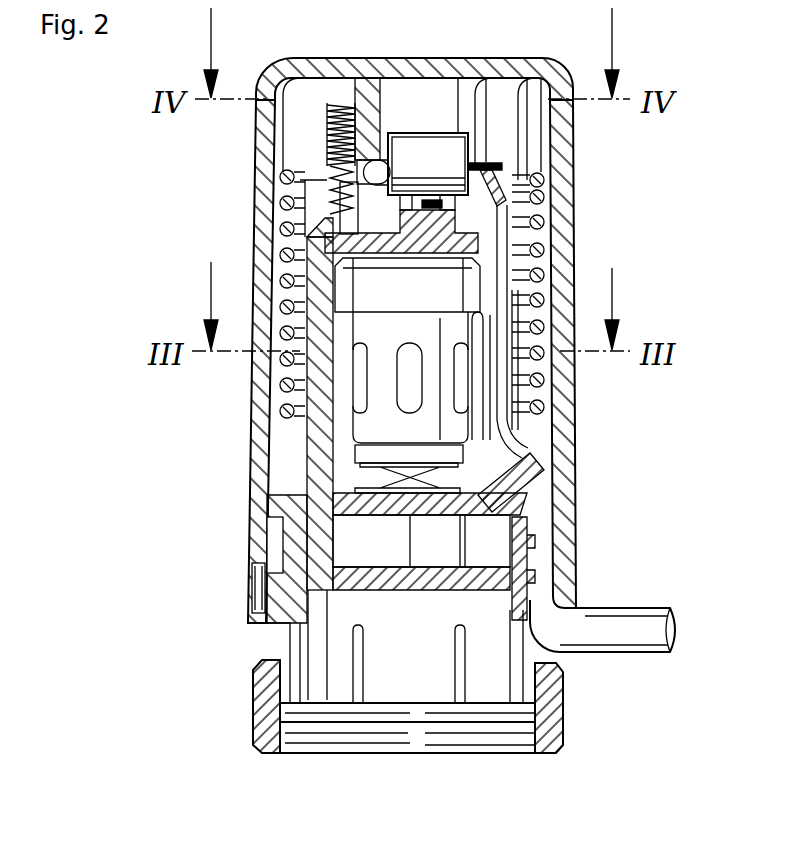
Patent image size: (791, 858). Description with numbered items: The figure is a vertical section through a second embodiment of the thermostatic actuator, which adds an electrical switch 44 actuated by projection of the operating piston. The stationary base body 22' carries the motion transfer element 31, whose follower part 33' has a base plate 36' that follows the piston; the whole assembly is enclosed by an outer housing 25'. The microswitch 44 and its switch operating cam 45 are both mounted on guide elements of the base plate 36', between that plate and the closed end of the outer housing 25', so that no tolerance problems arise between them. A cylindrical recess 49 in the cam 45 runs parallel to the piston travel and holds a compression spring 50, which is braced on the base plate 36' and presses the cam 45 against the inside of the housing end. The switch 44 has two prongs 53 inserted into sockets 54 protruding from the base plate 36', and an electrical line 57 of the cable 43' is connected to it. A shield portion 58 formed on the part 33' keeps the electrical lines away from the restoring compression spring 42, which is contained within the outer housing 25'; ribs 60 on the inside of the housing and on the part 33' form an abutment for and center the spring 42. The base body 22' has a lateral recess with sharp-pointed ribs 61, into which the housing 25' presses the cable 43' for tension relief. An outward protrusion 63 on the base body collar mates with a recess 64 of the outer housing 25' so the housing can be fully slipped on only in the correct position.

The base body 22' is at (353, 598).
The outer housing 25' is at (384, 340).
The motion transfer element 31 is at (305, 242).
The part of actuating element 33' is at (255, 216).
The base plate 36' is at (402, 351).
The compression spring 42 is at (283, 270).
The cable 43' is at (602, 658).
The electrical switch 44 is at (433, 164).
The switch operating cam 45 is at (352, 88).
The cylindrical recess 49 is at (327, 138).
The compression spring 50 is at (327, 160).
The prongs 53 is at (430, 203).
The sockets 54 is at (447, 221).
The electrical line 57 is at (500, 262).
The shield portion 58 is at (540, 370).
The ribs 60 is at (482, 142).
The ribs 61 is at (532, 585).
The protrusion 63 is at (258, 596).
The recess 64 is at (256, 570).